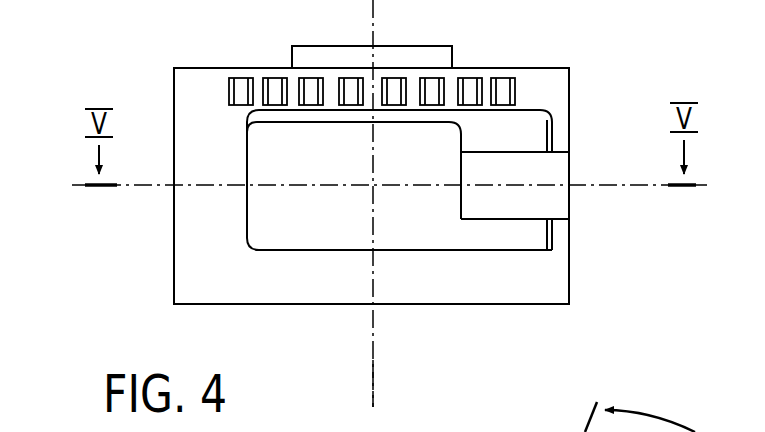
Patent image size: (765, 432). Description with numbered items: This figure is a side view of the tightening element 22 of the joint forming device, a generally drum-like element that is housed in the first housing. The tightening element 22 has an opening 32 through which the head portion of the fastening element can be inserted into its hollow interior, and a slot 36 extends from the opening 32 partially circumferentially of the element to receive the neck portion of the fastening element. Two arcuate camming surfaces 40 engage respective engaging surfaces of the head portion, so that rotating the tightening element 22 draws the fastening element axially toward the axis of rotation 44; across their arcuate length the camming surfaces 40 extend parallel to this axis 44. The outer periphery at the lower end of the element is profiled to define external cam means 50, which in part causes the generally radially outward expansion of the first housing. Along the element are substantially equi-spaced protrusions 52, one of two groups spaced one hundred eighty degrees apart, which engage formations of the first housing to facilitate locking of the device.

The tightening element 22 is at (166, 90).
The opening 32 is at (321, 226).
The slot 36 is at (540, 173).
The arcuate camming surfaces 40 is at (540, 138).
The axis of rotation 44 is at (377, 397).
The external cam means 50 is at (569, 269).
The protrusions 52 is at (437, 82).